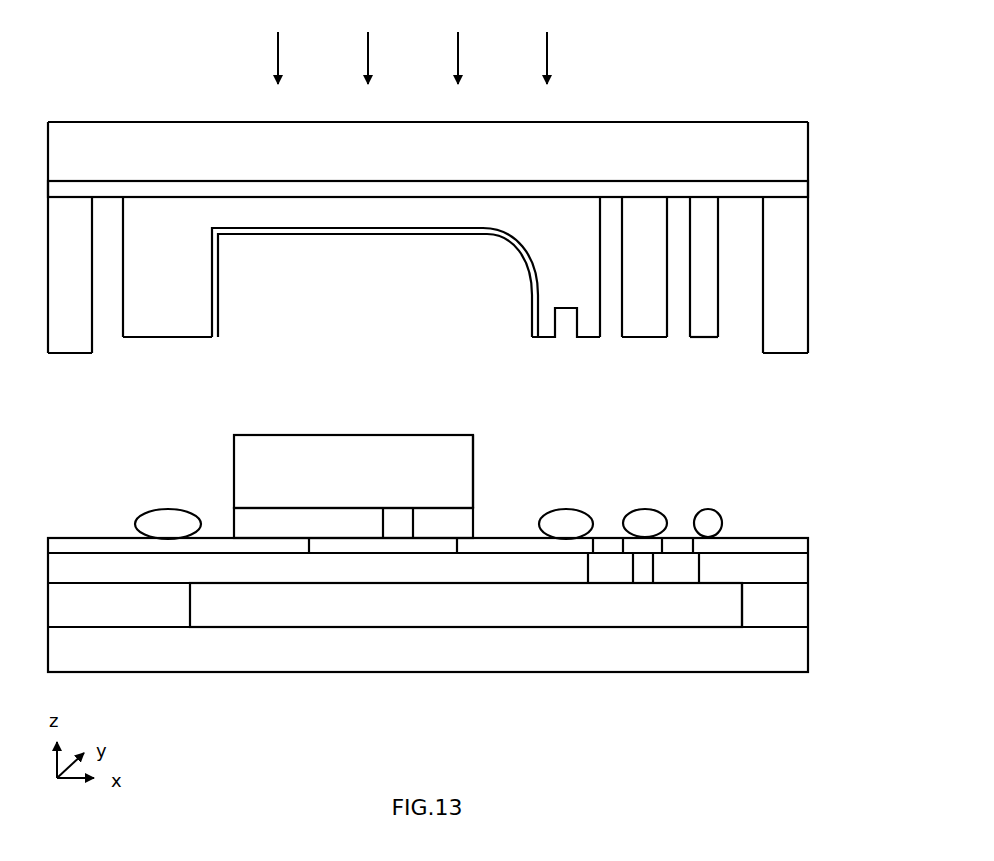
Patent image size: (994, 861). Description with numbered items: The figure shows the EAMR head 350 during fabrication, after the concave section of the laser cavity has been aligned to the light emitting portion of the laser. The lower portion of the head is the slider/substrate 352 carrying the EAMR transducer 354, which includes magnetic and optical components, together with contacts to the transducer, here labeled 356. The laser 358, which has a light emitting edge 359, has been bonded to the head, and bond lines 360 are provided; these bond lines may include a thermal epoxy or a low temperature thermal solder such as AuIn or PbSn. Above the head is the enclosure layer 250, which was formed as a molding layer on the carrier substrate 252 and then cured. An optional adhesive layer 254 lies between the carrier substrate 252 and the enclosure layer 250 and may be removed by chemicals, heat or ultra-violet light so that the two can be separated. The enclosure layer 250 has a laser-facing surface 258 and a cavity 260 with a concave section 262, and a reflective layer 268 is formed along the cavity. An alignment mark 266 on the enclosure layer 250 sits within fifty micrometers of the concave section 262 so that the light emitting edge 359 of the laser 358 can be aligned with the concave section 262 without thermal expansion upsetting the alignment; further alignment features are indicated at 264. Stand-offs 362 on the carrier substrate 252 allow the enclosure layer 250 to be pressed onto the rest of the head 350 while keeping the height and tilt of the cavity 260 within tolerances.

The EAMR head 350 is at (409, 30).
The enclosure layer 250 is at (728, 108).
The carrier substrate 252 is at (450, 122).
The adhesive layer 254 is at (182, 180).
The reflective layer 268 is at (570, 186).
The laser-facing surface 258 is at (198, 348).
The cavity 260 is at (360, 326).
The concave section 262 is at (503, 289).
The alignment mark 266 is at (568, 338).
The slots 264 is at (607, 338).
The stand-offs 362 is at (70, 353).
The slider/substrate 352 is at (398, 673).
The EAMR transducer 354 is at (222, 628).
The pads/vias 356 is at (622, 585).
The laser 358 is at (234, 478).
The light emitting edge 359 is at (487, 478).
The bond lines 360 is at (162, 508).